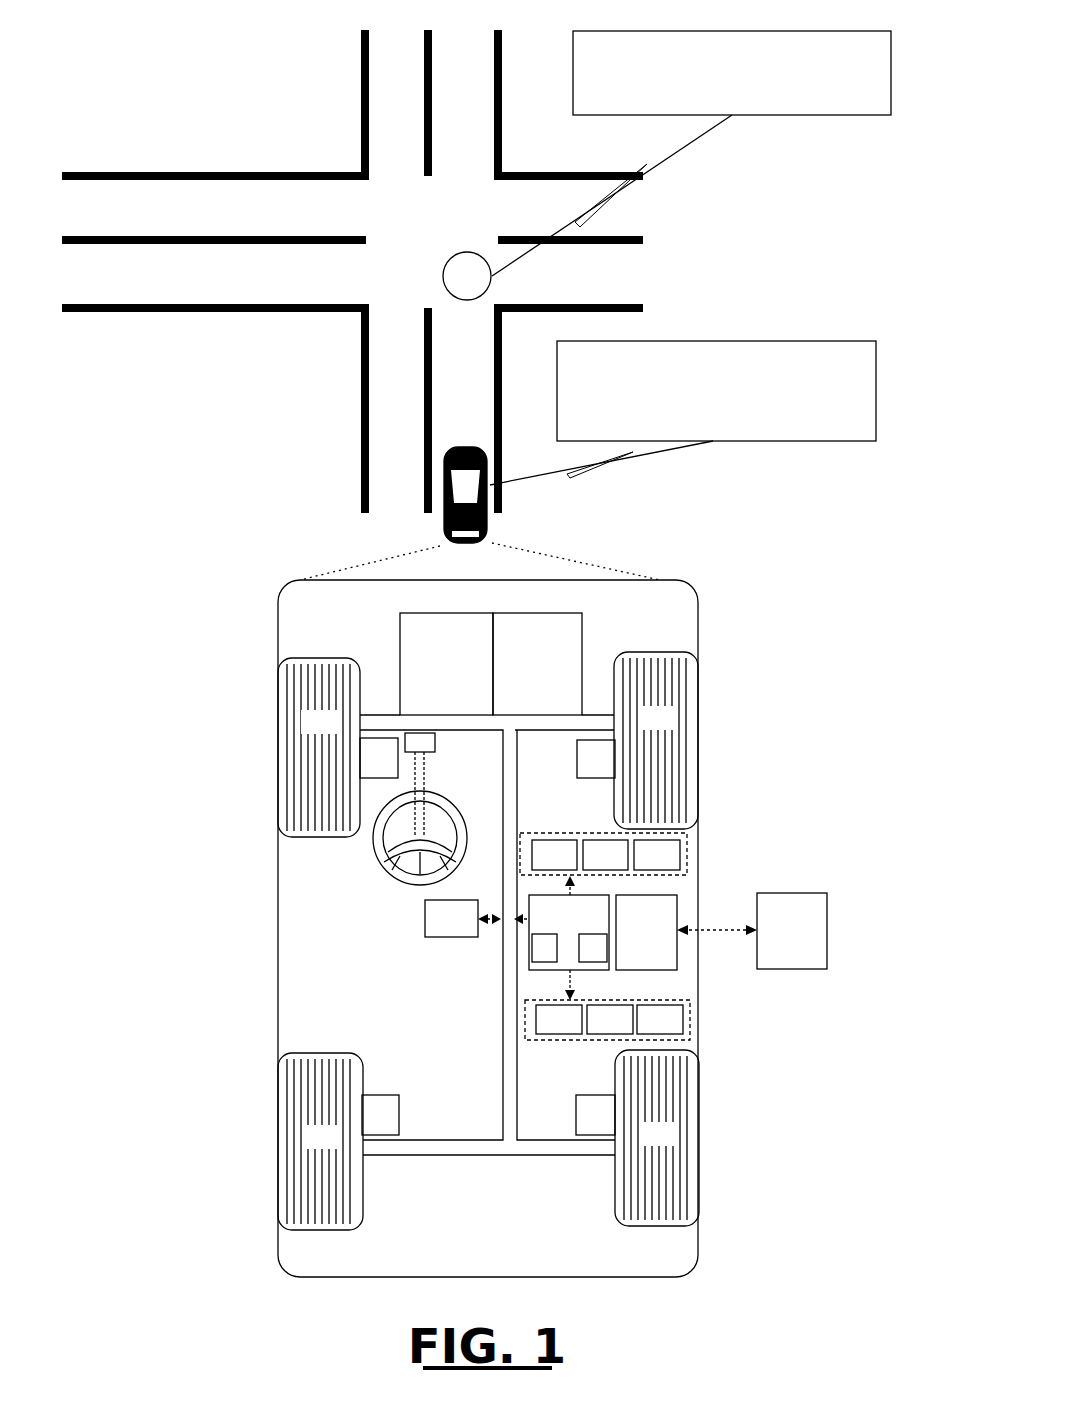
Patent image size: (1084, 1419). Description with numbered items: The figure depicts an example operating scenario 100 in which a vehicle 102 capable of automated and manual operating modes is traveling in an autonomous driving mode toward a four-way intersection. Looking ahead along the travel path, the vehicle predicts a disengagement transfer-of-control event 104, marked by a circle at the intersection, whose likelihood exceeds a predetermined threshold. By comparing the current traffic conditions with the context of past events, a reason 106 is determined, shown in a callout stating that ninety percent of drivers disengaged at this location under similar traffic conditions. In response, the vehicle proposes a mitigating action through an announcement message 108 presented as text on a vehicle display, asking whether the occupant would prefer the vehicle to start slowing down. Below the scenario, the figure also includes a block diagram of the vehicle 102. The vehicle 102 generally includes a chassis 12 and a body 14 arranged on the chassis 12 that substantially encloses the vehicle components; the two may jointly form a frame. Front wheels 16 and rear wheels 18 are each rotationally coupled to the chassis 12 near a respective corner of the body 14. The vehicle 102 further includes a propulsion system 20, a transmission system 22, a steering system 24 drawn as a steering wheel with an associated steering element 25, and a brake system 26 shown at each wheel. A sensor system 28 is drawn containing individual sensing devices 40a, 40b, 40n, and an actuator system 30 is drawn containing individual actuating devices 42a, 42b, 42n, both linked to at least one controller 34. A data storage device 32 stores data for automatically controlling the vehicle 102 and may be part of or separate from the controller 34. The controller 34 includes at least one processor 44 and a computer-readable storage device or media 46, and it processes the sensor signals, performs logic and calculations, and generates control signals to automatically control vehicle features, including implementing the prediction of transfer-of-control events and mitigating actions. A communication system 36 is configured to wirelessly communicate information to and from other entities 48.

The operating scenario 100 is at (296, 38).
The vehicle 102 is at (463, 447).
The transfer-of-control event 104 is at (468, 275).
The reason 106 is at (904, 72).
The announcement message 108 is at (884, 388).
The chassis 12 is at (509, 1156).
The body 14 is at (278, 896).
The front wheels 16 is at (488, 744).
The rear wheels 18 is at (488, 1140).
The propulsion system 20 is at (446, 664).
The transmission system 22 is at (537, 664).
The steering system 24 is at (394, 900).
The steering column 25 is at (456, 802).
The brake system 26 is at (487, 936).
The sensor system 28 is at (566, 835).
The actuator system 30 is at (552, 1041).
The data storage device 32 is at (451, 918).
The controller 34 is at (569, 932).
The communication system 36 is at (646, 932).
The sensor 40a is at (554, 855).
The sensor 40b is at (605, 855).
The sensor 40n is at (657, 855).
The actuator 42a is at (559, 1019).
The actuator 42b is at (610, 1019).
The actuator 42n is at (660, 1019).
The processor 44 is at (544, 948).
The computer-readable storage device or media 46 is at (593, 948).
The other entities 48 is at (792, 931).